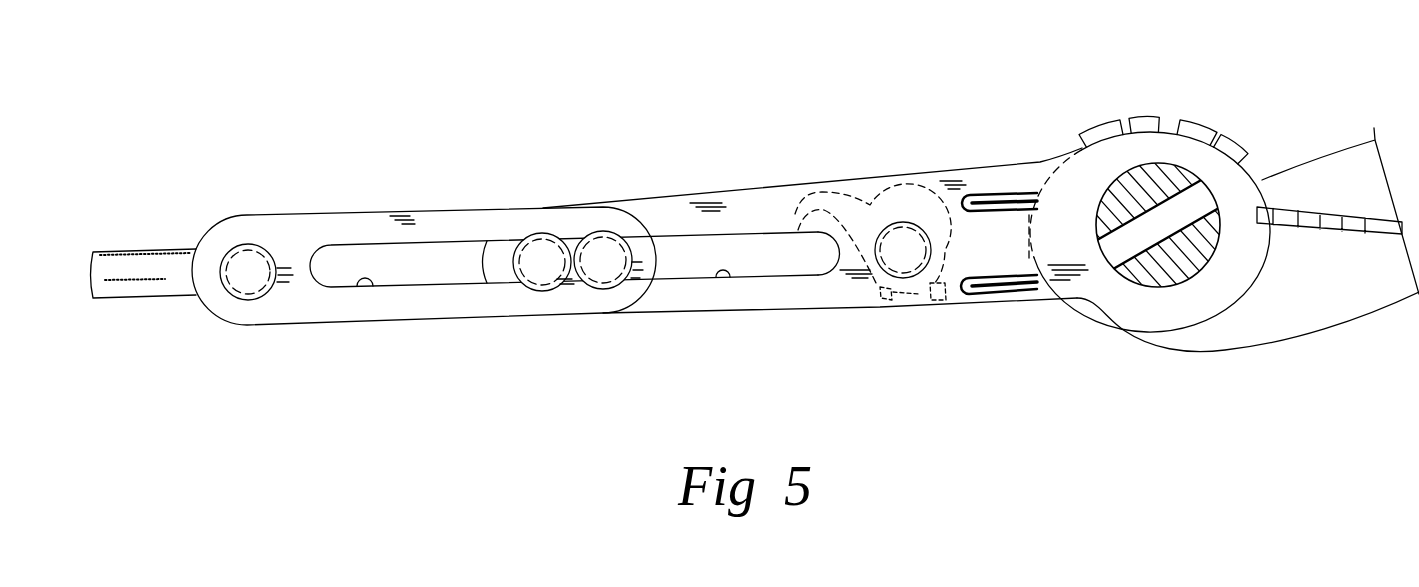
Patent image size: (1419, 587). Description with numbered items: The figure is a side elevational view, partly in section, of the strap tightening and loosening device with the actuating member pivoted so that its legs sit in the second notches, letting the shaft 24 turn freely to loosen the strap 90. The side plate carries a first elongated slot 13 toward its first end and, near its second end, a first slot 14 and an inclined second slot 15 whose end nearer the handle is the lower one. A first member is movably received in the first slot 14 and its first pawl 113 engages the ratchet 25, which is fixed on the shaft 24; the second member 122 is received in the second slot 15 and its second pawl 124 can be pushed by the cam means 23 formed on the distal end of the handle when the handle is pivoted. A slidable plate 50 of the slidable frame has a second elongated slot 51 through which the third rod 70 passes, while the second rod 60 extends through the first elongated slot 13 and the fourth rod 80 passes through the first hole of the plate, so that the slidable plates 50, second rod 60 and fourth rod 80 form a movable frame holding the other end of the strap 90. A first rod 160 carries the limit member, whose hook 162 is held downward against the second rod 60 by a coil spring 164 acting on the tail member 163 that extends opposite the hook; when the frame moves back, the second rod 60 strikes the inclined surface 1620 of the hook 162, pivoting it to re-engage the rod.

The first elongated slot 13 is at (717, 280).
The first slot 14 is at (973, 193).
The second slot 15 is at (1033, 292).
The cam means 23 is at (1030, 203).
The shaft 24 is at (1183, 273).
The ratchet 25 is at (1148, 130).
The slidable plate 50 is at (328, 228).
The second elongated slot 51 is at (368, 287).
The second rod 60 is at (600, 260).
The third rod 70 is at (539, 262).
The fourth rod 80 is at (250, 262).
The strap 90 is at (146, 262).
The first pawl 113 is at (1000, 199).
The second member 122 is at (940, 284).
The second pawl 124 is at (990, 286).
The first rod 160 is at (897, 247).
The hook 162 is at (814, 202).
The tail member 163 is at (937, 283).
The coil spring 164 is at (882, 294).
The inclined surface 1620 is at (796, 222).